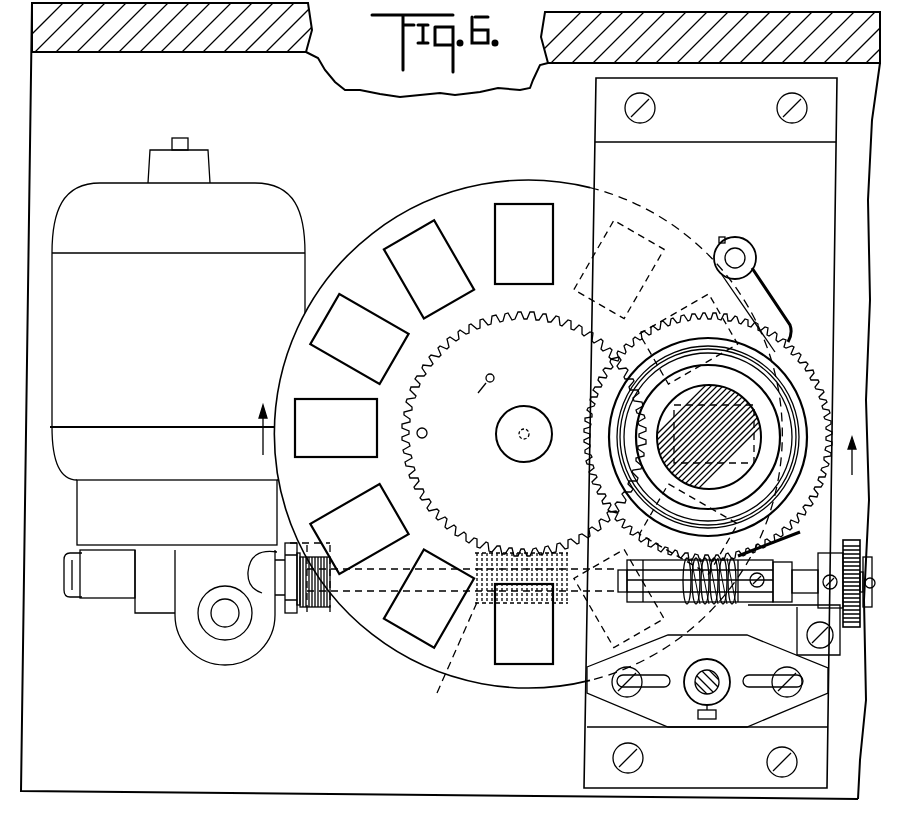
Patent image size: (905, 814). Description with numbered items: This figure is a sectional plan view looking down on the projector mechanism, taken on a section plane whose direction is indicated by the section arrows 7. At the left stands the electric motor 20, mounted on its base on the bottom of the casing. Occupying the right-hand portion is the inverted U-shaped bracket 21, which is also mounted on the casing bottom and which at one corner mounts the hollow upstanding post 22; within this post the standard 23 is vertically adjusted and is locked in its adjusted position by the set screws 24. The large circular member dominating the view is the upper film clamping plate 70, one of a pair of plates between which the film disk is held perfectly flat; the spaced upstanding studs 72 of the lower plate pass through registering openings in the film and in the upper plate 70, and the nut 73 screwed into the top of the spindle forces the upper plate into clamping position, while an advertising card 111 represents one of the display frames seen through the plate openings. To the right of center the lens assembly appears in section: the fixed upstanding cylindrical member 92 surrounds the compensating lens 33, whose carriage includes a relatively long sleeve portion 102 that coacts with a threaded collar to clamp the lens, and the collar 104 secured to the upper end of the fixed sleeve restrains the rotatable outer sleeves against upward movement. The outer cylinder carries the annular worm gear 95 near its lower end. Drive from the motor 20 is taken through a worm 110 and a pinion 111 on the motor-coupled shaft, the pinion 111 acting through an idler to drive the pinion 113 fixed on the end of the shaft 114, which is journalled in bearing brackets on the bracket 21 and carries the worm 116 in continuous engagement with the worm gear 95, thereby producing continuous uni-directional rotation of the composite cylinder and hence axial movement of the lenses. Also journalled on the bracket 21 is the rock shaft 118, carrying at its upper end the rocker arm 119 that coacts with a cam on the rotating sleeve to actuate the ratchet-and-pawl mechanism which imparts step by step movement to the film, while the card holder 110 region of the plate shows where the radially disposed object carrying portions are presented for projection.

The section line 7- 7 is at (554, 442).
The electric motor 20 is at (255, 197).
The inverted U-shaped bracket 21 is at (603, 160).
The hollow upstanding post 22 is at (690, 693).
The standard 23 is at (717, 689).
The set screws 24 is at (708, 721).
The compensating lens 33 is at (702, 437).
The upper film clamping plate 70 is at (384, 236).
The upstanding studs 72 is at (425, 430).
The nut 73 is at (535, 412).
The upstanding cylindrical member 92 is at (800, 440).
The annular worm gear 95 is at (800, 341).
The sleeve portions 102 is at (778, 408).
The collar 104 is at (805, 413).
The worm 110 is at (447, 660).
The pinion 111 is at (358, 510).
The pinion 113 is at (855, 540).
The shaft 114 is at (744, 588).
The worm 116 is at (734, 601).
The rock shaft 118 is at (745, 258).
The rocker arm 119 is at (762, 287).